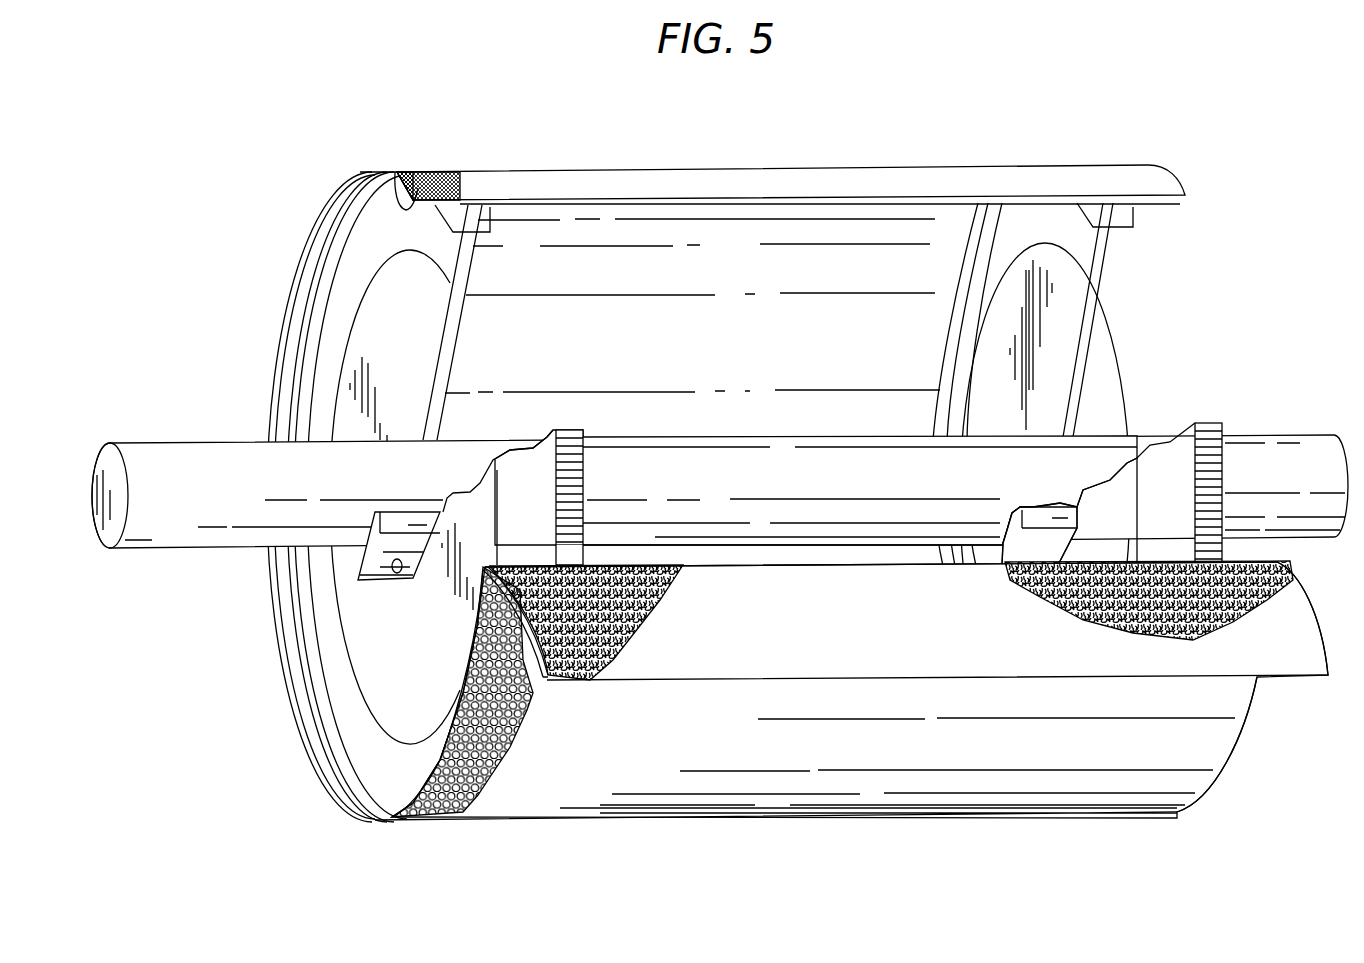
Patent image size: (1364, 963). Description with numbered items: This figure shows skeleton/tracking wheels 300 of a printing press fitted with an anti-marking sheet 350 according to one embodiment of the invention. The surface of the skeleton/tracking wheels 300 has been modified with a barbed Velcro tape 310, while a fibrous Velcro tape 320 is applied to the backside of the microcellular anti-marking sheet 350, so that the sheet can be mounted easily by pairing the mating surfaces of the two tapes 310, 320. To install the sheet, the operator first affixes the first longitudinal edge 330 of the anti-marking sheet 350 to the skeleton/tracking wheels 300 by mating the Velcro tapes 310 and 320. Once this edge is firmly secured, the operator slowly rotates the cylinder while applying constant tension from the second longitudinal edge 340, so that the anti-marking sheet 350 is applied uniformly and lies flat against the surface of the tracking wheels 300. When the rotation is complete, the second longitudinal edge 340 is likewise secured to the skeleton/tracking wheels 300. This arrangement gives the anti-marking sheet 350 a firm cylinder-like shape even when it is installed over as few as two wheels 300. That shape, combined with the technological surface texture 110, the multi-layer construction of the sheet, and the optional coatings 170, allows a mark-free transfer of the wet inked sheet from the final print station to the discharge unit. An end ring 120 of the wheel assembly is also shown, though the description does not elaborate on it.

The technological surface texture 110 is at (443, 172).
The end ring 120 is at (397, 172).
The optional coatings 170 is at (407, 172).
The skeleton/tracking wheels 300 is at (952, 388).
The barbed Velcro tape 310 is at (1203, 423).
The fibrous Velcro tape 320 is at (594, 686).
The first longitudinal edge 330 is at (727, 205).
The second longitudinal edge 340 is at (828, 680).
The anti-marking sheet 350 is at (983, 173).